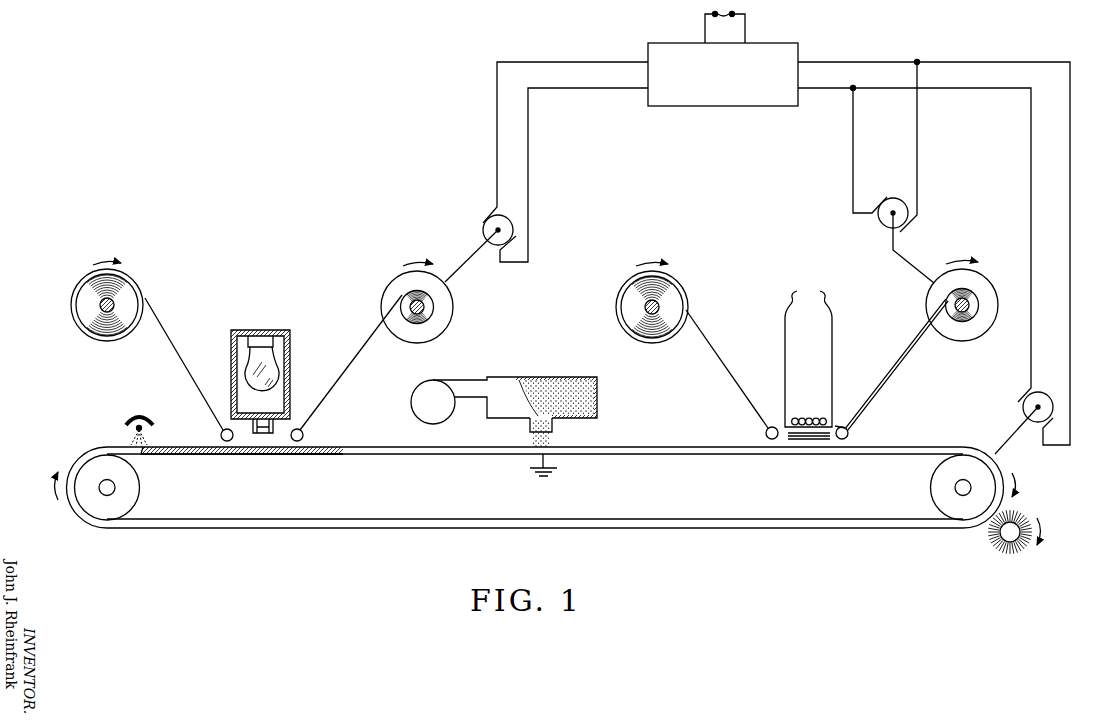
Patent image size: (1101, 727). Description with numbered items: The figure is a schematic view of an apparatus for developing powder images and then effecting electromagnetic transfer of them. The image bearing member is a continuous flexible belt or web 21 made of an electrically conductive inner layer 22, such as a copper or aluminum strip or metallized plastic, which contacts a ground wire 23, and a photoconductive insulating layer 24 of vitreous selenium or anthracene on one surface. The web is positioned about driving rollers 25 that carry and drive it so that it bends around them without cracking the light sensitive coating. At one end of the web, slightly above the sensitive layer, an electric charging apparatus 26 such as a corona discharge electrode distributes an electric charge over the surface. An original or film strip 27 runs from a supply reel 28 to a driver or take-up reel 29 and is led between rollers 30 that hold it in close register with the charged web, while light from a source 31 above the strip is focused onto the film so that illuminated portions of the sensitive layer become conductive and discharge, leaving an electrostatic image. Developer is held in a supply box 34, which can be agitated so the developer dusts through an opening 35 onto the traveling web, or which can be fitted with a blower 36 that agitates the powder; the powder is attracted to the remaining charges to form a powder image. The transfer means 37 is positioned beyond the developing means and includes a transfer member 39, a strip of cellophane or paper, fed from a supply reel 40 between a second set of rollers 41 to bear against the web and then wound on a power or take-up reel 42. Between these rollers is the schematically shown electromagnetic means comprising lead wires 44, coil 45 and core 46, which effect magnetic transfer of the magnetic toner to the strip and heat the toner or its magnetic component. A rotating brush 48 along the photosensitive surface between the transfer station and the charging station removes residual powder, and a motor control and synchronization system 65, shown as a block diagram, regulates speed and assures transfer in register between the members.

The flexible belt or web 21 is at (590, 530).
The electrically conductive inner layer 22 is at (175, 456).
The ground wire 23 is at (556, 473).
The photoconductive insulating layer 24 is at (273, 456).
The driving rollers 25 is at (139, 492).
The electric charging apparatus 26 is at (127, 428).
The original or film strip 27 is at (156, 320).
The supply reel 28 is at (90, 338).
The driver or take-up reel 29 is at (381, 300).
The rollers 30 is at (221, 434).
The light source 31 is at (262, 330).
The supply box 34 is at (564, 377).
The opening 35 is at (556, 426).
The blower 36 is at (435, 382).
The transfer means 37 is at (840, 413).
The transfer member 39 is at (705, 332).
The supply reel 40 is at (683, 288).
The second set of rollers 41 is at (765, 432).
The power or take-up reel 42 is at (955, 338).
The lead wires 44 is at (808, 357).
The coil 45 is at (815, 418).
The core 46 is at (783, 432).
The rotating brush 48 is at (1010, 549).
The motor control and synchronization system 65 is at (782, 42).